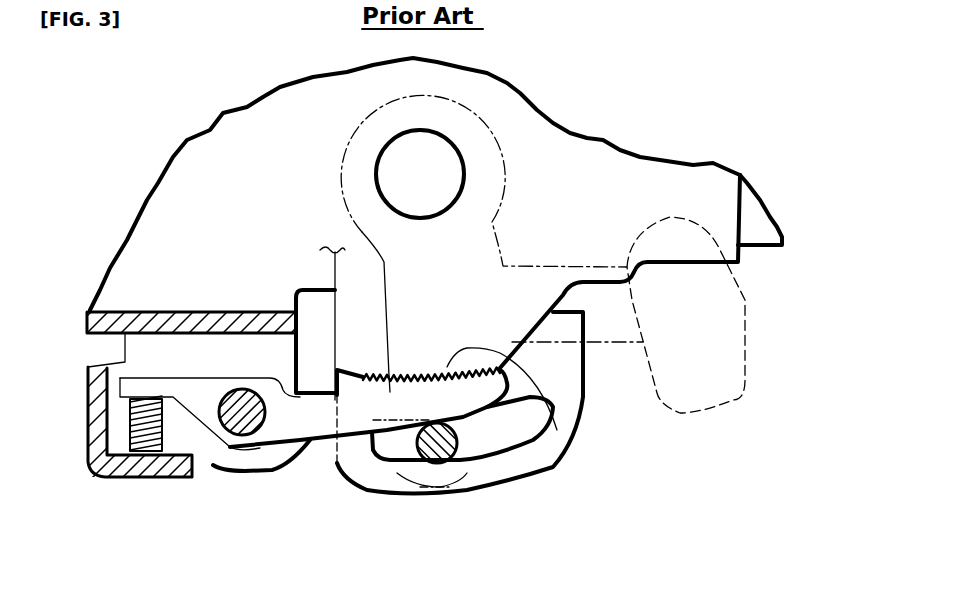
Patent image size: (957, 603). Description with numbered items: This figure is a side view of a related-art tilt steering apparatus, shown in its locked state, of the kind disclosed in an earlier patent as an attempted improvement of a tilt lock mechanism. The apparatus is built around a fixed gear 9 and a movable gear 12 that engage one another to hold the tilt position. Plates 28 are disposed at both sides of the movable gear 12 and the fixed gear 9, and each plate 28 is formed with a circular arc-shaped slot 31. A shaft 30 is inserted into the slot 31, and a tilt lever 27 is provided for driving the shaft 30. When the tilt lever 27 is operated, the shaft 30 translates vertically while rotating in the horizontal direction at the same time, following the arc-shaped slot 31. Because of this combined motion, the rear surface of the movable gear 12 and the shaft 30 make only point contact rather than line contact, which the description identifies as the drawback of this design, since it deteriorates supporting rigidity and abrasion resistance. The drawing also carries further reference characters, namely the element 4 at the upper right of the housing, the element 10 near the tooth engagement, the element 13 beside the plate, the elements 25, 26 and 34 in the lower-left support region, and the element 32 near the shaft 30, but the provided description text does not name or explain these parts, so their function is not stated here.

The lever arm with hook 4 is at (760, 235).
The fixed gear 9 is at (358, 363).
The tooth engagement / pivot pin 10 is at (410, 381).
The movable gear 12 is at (307, 427).
The bracket 13 is at (591, 417).
The L-shaped support bracket 25 is at (92, 466).
The pivot pin 26 is at (235, 425).
The tilt lever 27 is at (603, 335).
The plates 28 is at (572, 428).
The shaft 30 is at (440, 462).
The circular arc-shaped slot 31 is at (535, 440).
The roller 32 is at (480, 418).
The spring 34 is at (145, 455).